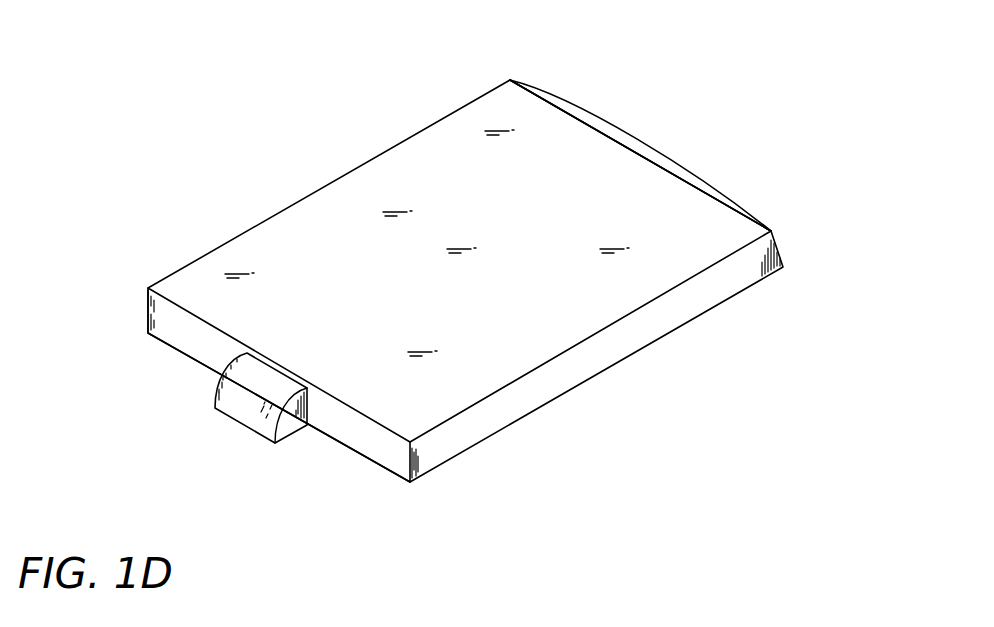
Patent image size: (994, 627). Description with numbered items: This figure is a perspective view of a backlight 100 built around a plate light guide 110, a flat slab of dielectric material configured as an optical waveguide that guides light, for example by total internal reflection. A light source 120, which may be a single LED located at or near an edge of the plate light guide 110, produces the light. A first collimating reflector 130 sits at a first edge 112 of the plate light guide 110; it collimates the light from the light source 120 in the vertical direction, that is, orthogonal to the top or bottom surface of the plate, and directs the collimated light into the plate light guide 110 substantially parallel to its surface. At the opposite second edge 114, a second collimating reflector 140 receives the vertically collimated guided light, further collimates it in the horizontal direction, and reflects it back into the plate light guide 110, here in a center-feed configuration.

The backlight 100 is at (466, 258).
The plate light guide 110 is at (345, 190).
The first edge 112 is at (140, 313).
The second edge 114 is at (596, 92).
The light source 120 is at (286, 445).
The first collimating reflector 130 is at (245, 408).
The second collimating reflector 140 is at (657, 150).